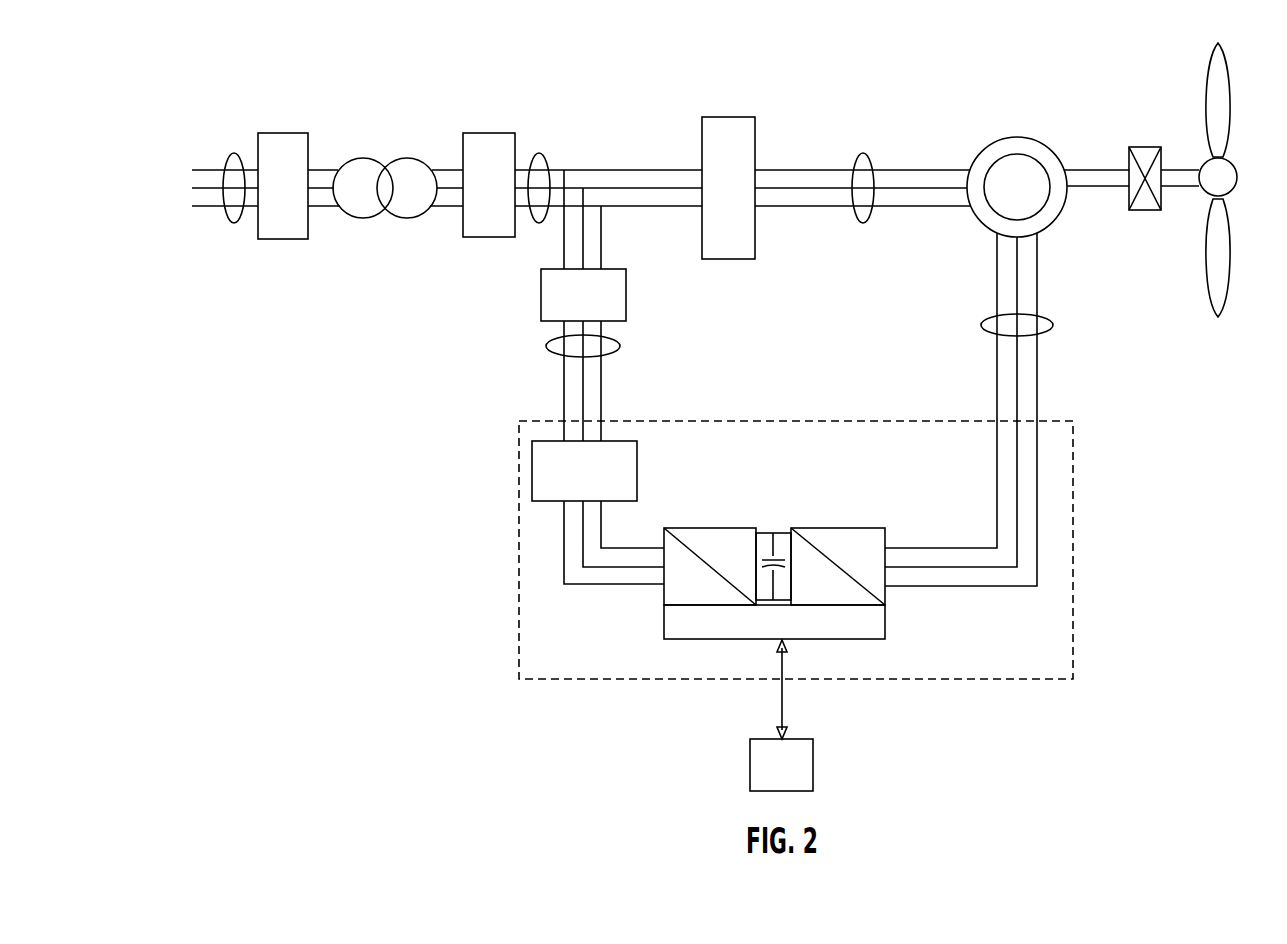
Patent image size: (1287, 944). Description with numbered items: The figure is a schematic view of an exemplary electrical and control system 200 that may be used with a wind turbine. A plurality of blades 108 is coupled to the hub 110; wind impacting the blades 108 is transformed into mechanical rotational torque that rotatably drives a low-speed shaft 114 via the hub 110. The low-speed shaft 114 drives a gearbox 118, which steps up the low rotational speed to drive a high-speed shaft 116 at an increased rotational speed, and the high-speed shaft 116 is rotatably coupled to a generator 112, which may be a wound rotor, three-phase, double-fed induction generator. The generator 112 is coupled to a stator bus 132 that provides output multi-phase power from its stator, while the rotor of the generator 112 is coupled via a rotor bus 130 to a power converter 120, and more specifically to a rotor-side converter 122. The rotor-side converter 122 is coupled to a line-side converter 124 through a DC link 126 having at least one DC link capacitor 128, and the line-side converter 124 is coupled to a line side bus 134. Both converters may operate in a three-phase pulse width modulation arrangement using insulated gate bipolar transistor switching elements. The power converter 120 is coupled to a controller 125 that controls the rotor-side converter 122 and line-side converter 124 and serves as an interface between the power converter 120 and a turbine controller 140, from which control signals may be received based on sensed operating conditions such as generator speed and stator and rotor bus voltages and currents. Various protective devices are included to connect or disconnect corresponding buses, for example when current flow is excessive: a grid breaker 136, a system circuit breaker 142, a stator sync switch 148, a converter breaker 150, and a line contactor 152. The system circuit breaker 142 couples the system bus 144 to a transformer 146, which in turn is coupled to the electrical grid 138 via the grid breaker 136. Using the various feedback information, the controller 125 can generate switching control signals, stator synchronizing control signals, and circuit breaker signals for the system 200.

The blades 108 is at (1229, 112).
The hub 110 is at (1237, 185).
The generator 112 is at (1026, 139).
The low-speed shaft 114 is at (1185, 187).
The high-speed shaft 116 is at (1097, 187).
The gearbox 118 is at (1147, 146).
The power converter 120 is at (1075, 565).
The rotor-side converter 122 is at (887, 593).
The line-side converter 124 is at (660, 598).
The controller 125 is at (700, 642).
The DC link 126 is at (783, 530).
The DC link capacitor 128 is at (770, 558).
The rotor bus 130 is at (1053, 325).
The stator bus 132 is at (865, 153).
The line side bus 134 is at (547, 347).
The grid breaker 136 is at (288, 132).
The electrical grid 138 is at (230, 152).
The turbine controller 140 is at (813, 747).
The system circuit breaker 142 is at (495, 133).
The system bus 144 is at (543, 153).
The transformer 146 is at (398, 158).
The stator sync switch 148 is at (725, 117).
The converter breaker 150 is at (541, 303).
The line contactor 152 is at (532, 472).
The electrical and control system 200 is at (389, 574).